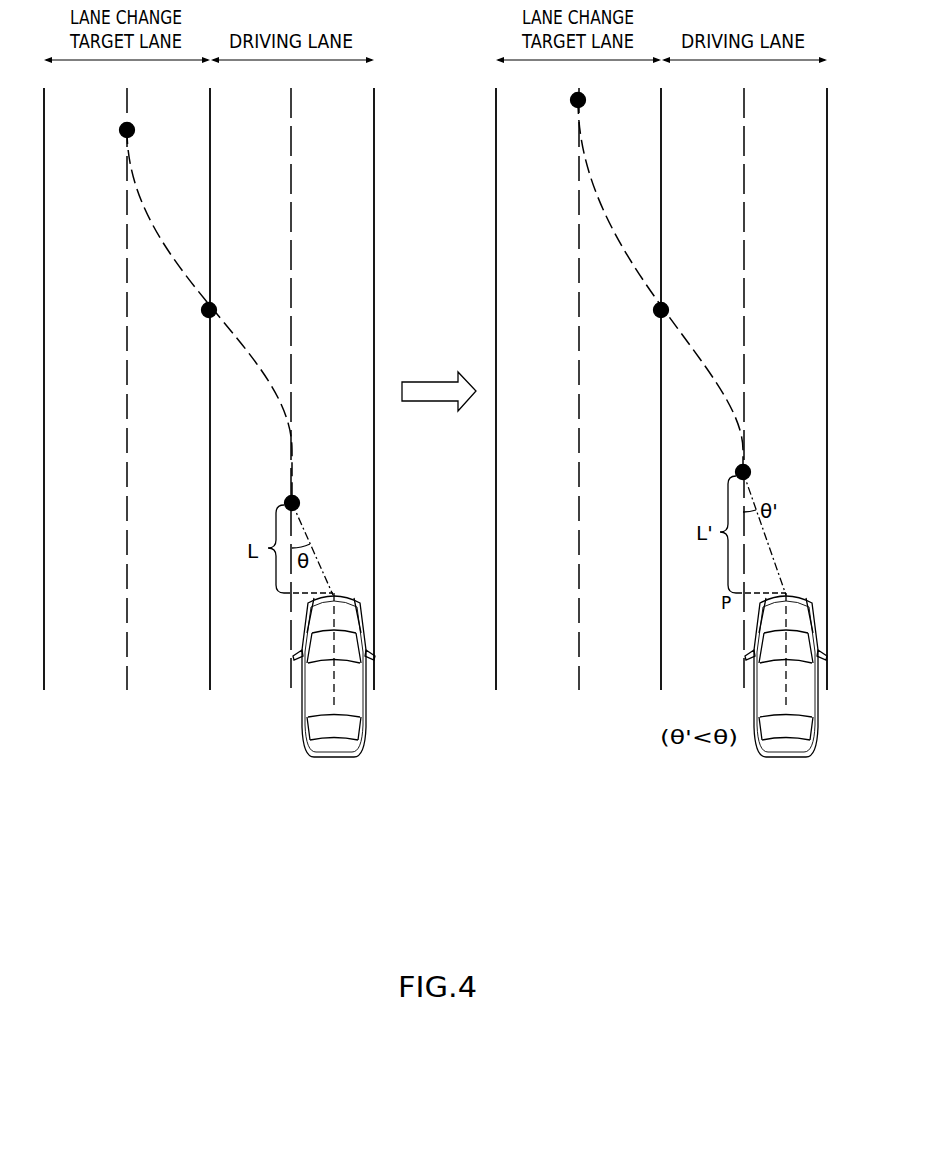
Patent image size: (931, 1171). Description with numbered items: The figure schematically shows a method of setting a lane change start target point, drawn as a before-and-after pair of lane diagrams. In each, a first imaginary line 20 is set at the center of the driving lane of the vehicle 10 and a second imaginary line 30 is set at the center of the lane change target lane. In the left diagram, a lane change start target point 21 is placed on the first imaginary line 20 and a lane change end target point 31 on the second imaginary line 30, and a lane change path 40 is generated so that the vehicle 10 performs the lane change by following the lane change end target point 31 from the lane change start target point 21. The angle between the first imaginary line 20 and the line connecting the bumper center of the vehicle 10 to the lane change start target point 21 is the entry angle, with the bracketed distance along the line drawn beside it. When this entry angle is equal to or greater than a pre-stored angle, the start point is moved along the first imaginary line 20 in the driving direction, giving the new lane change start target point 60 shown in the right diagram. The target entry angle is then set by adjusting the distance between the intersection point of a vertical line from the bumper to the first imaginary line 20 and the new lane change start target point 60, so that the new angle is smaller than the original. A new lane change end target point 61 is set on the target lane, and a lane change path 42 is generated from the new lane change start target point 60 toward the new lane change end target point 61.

The vehicle 10 is at (333, 758).
The first imaginary line 20 is at (291, 218).
The lane change start target point 21 is at (298, 500).
The second imaginary line 30 is at (127, 417).
The lane change end target point 31 is at (132, 124).
The lane change path 40 is at (160, 253).
The lane change path 42 is at (612, 253).
The new lane change start target point 60 is at (748, 468).
The new lane change end target point 61 is at (584, 105).